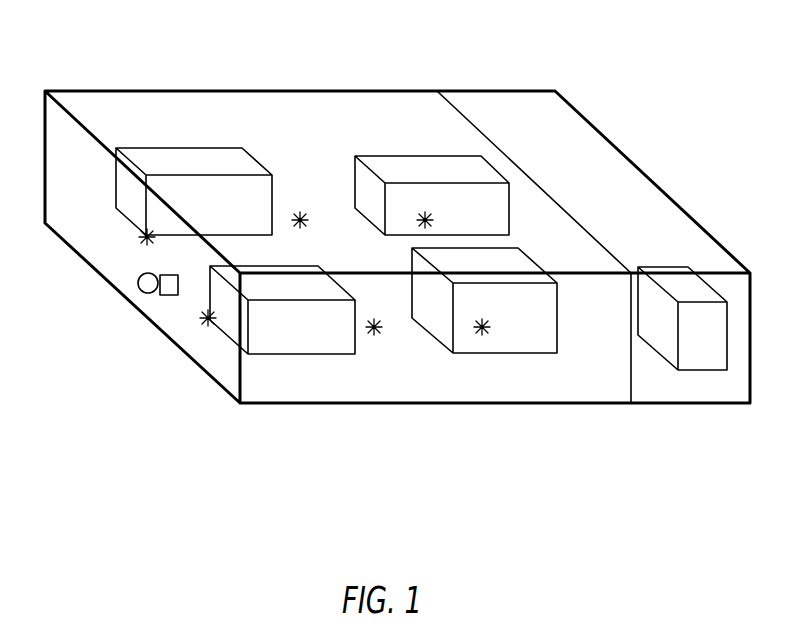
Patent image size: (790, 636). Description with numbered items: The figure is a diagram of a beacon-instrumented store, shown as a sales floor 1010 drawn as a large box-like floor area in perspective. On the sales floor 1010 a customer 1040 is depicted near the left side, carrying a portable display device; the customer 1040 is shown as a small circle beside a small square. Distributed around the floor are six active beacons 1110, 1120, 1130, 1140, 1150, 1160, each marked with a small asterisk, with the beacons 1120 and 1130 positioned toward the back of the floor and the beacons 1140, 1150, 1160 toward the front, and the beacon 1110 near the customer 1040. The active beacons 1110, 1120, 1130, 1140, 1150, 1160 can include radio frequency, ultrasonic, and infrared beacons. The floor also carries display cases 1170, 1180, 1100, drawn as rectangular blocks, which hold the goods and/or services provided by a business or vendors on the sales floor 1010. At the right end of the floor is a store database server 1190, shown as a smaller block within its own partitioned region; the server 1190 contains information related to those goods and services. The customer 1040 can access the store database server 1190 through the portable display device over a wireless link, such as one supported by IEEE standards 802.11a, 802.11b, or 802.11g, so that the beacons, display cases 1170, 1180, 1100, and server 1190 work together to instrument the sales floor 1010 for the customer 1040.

The sales floor 1010 is at (55, 91).
The customer 1040 is at (147, 293).
The display case 1100 is at (551, 350).
The active beacon 1110 is at (145, 239).
The active beacon 1120 is at (300, 212).
The active beacon 1130 is at (425, 212).
The active beacon 1140 is at (206, 319).
The active beacon 1150 is at (168, 296).
The active beacon 1160 is at (482, 330).
The display case 1170 is at (182, 148).
The display case 1180 is at (356, 156).
The store database server 1190 is at (684, 366).